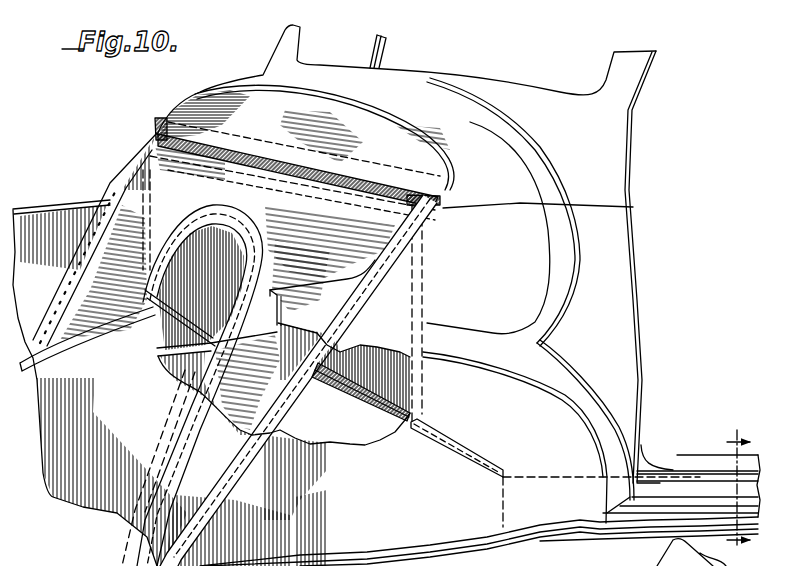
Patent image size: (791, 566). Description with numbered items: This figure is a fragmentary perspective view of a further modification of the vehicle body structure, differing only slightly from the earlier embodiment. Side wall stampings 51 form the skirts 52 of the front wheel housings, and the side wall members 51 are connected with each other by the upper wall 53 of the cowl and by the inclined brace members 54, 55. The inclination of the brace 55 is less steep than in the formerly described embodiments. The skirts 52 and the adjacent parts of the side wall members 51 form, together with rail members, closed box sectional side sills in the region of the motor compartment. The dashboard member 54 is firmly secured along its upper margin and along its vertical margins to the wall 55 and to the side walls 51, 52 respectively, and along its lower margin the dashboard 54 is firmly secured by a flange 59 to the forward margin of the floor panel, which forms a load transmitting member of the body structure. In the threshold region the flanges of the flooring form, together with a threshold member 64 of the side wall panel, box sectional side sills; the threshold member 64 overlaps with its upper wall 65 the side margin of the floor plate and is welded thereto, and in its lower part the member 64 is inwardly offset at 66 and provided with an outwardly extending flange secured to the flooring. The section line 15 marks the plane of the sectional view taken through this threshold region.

The side wall stamping 51 is at (603, 258).
The skirt 52 is at (77, 487).
The upper wall of the cowl 53 is at (407, 110).
The dashboard member 54 is at (367, 380).
The brace member 55 is at (117, 198).
The flange 59 is at (507, 467).
The threshold member 64 is at (673, 490).
The upper wall 65 is at (683, 463).
The inward offset 66 is at (668, 513).
The section line 15- 15 is at (741, 492).